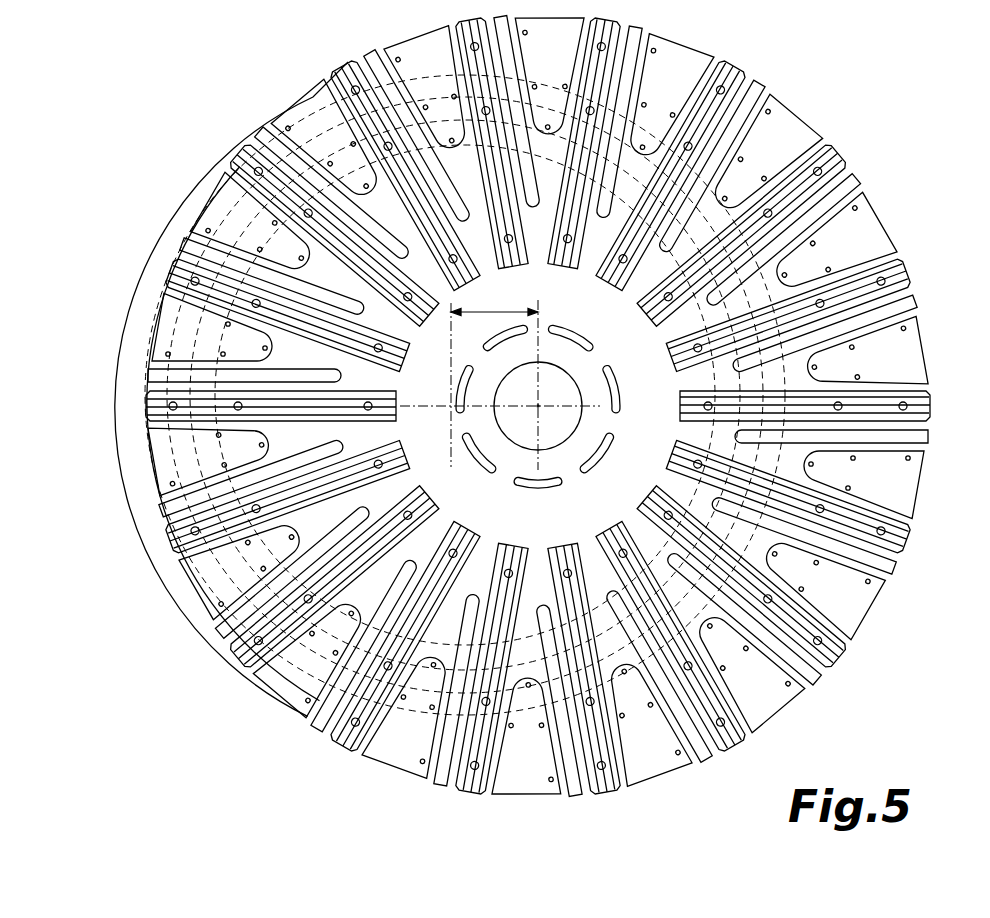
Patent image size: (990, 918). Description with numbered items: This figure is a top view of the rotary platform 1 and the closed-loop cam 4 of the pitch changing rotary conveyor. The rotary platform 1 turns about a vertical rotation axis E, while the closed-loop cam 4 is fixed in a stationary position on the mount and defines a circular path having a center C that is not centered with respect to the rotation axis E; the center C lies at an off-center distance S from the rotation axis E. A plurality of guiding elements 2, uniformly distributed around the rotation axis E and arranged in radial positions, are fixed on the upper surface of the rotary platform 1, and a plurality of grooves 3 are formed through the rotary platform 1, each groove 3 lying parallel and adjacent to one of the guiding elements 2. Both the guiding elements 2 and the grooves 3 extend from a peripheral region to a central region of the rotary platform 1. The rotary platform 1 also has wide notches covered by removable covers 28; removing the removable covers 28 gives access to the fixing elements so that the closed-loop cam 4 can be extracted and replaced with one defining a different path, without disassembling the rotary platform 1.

The rotary platform 1 is at (594, 518).
The guiding element 2 is at (884, 389).
The groove 3 is at (870, 437).
The closed-loop cam 4 is at (147, 377).
The removable cover 28 is at (862, 603).
The center of the circular path C is at (451, 405).
The rotation axis E is at (540, 405).
The off-center distance S is at (494, 298).